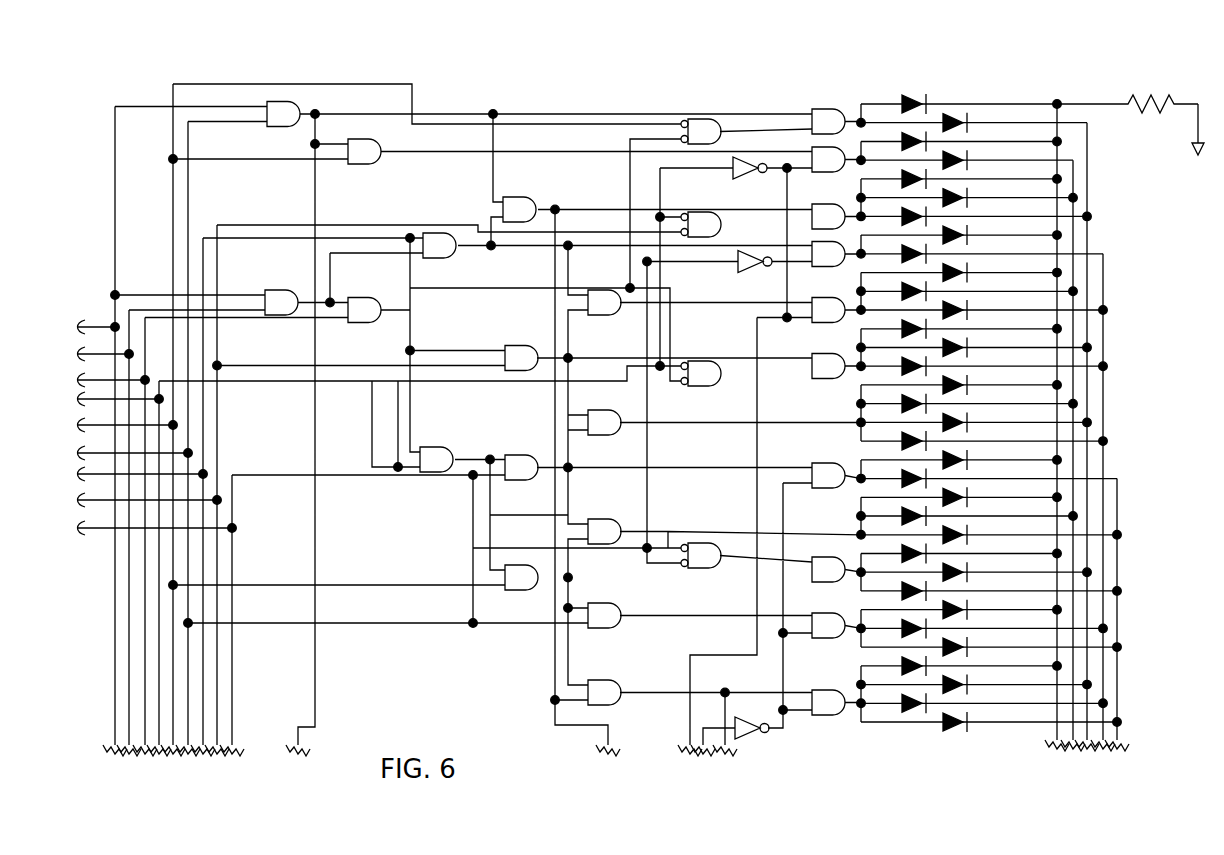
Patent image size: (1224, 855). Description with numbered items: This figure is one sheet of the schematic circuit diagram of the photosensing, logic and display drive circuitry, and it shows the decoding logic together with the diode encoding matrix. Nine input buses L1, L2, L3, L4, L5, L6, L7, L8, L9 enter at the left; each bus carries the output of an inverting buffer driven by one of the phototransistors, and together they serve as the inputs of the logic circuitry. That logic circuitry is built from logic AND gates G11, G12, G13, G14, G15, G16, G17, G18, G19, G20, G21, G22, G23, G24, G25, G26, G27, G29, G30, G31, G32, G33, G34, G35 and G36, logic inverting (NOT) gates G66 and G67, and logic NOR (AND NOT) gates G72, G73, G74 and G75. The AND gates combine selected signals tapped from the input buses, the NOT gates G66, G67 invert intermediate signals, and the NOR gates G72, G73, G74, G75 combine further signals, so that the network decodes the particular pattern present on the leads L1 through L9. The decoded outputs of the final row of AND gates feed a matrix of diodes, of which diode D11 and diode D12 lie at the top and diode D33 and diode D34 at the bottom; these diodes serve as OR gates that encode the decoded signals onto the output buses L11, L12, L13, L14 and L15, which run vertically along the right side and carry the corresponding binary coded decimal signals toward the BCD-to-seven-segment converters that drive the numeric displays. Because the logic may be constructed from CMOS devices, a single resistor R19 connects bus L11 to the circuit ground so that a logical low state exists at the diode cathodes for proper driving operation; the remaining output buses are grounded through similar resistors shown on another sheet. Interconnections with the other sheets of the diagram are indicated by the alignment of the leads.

The logic AND gate G11 is at (298, 106).
The logic AND gate G12 is at (382, 151).
The logic AND gate G13 is at (834, 111).
The logic AND gate G14 is at (848, 134).
The logic AND gate G15 is at (833, 205).
The logic AND gate G16 is at (834, 271).
The logic AND gate G17 is at (534, 195).
The logic AND gate G18 is at (443, 259).
The logic AND gate G19 is at (285, 290).
The logic AND gate G20 is at (379, 304).
The logic AND gate G21 is at (617, 320).
The logic AND gate G22 is at (834, 302).
The logic AND gate G23 is at (834, 355).
The logic AND gate G24 is at (617, 410).
The logic AND gate G25 is at (459, 446).
The logic AND gate G26 is at (531, 453).
The logic AND gate G27 is at (504, 342).
The logic AND gate G29 is at (836, 465).
The logic AND gate G30 is at (836, 559).
The logic AND gate G31 is at (626, 516).
The logic AND gate G32 is at (517, 591).
The logic AND gate G33 is at (616, 602).
The logic AND gate G34 is at (836, 615).
The logic AND gate G35 is at (616, 680).
The logic AND gate G36 is at (836, 692).
The logic NOR (AND NOT) gate G72 is at (720, 136).
The logic NOR (AND NOT) gate G73 is at (720, 227).
The logic NOR (AND NOT) gate G74 is at (705, 364).
The logic NOR (AND NOT) gate G75 is at (709, 553).
The logic inverting (NOT) gate G66 is at (756, 168).
The logic inverting (NOT) gate G67 is at (732, 267).
The diode D11 is at (922, 93).
The diode D12 is at (966, 111).
The diode D33 is at (905, 721).
The diode D34 is at (951, 731).
The resistor R19 is at (1157, 95).
The bus L1 is at (113, 573).
The bus L2 is at (127, 591).
The bus L3 is at (143, 609).
The bus L4 is at (157, 628).
The bus L5 is at (171, 647).
The bus L6 is at (186, 666).
The bus L7 is at (204, 678).
The bus L8 is at (218, 697).
The bus L9 is at (233, 712).
The output bus L11 is at (1062, 158).
The output bus L12 is at (1076, 188).
The output bus L13 is at (1089, 240).
The output bus L14 is at (1105, 290).
The output bus L15 is at (1119, 500).